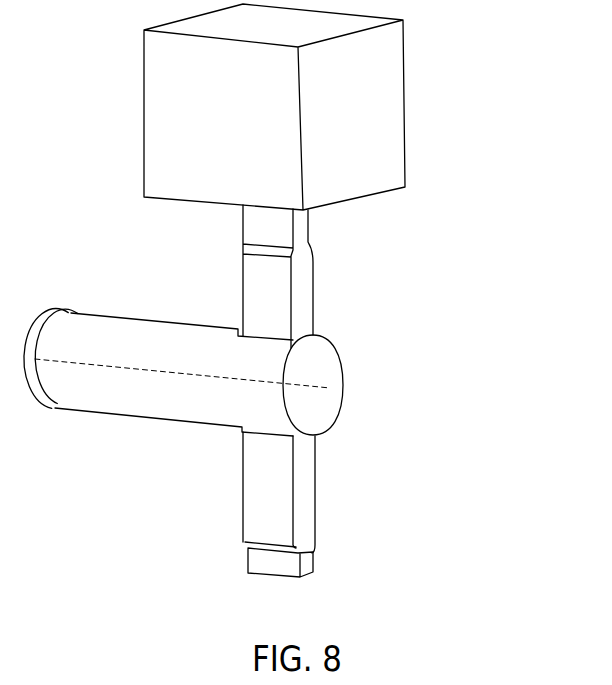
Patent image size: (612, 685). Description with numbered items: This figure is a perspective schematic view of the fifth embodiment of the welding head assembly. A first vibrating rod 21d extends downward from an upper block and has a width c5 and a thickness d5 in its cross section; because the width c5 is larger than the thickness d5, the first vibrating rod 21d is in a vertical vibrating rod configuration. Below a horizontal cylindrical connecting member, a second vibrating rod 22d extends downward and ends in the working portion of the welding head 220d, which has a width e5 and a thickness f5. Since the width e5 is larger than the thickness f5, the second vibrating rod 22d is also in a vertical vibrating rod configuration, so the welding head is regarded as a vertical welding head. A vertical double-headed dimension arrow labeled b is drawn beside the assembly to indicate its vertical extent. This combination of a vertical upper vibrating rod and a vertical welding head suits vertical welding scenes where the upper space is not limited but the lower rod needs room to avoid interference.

The first vibrating rod 21d is at (275, 280).
The second vibrating rod 22d is at (277, 472).
The working portion of the welding head 220d is at (275, 579).
The height dimension b is at (559, 173).
The width of the first vibrating rod c5 is at (293, 228).
The thickness of the first vibrating rod d5 is at (293, 229).
The width of the working portion of the welding head e5 is at (300, 563).
The thickness of the working portion of the welding head f5 is at (290, 567).